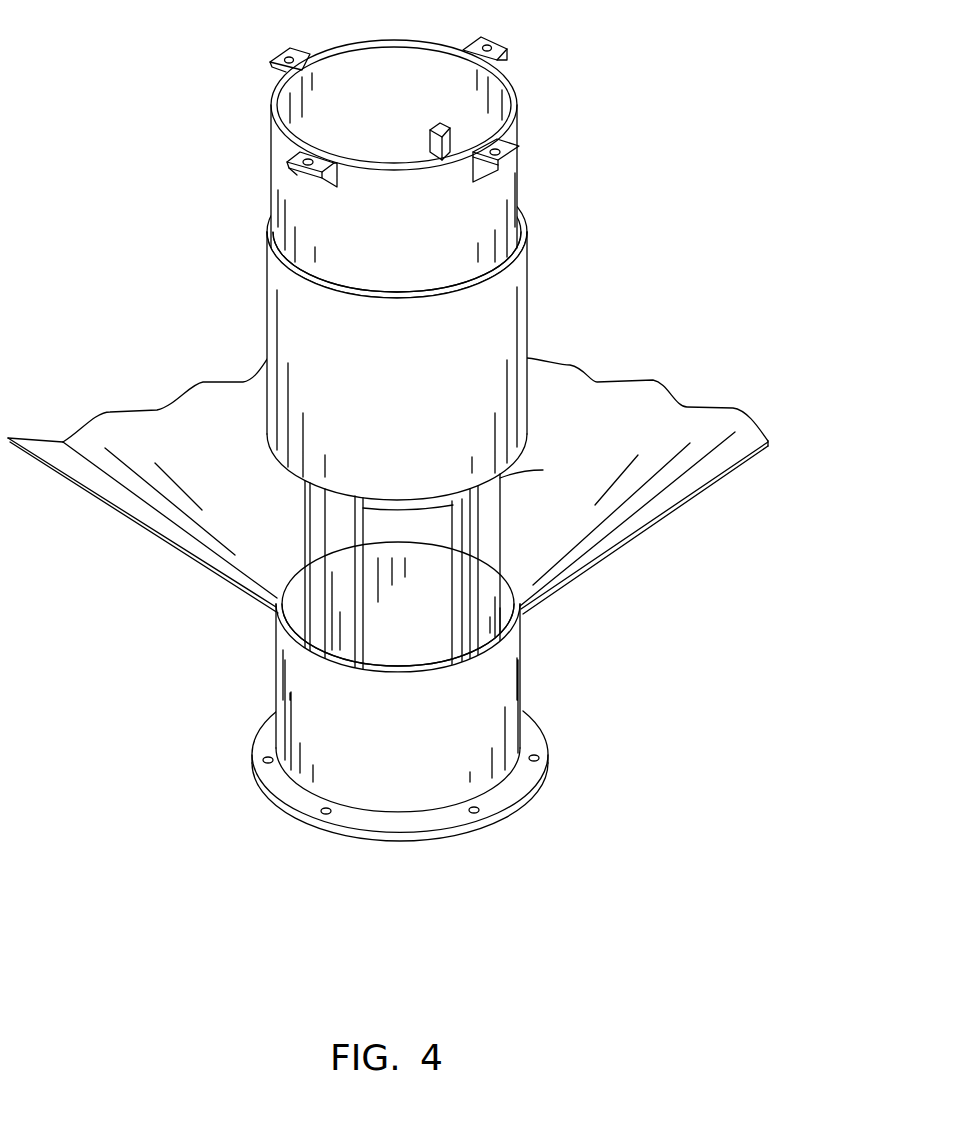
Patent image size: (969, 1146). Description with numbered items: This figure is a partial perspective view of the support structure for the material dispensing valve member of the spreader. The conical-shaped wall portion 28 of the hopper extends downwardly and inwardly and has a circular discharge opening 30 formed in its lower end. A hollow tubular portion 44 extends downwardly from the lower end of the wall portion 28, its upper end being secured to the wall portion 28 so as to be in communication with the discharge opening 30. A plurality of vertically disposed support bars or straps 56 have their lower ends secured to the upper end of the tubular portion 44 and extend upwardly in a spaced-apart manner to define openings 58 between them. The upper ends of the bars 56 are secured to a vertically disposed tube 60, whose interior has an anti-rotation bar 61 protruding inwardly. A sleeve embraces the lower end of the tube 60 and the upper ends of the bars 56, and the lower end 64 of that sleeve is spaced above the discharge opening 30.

The conical-shaped wall portion 28 is at (660, 476).
The circular discharge opening 30 is at (520, 607).
The hollow tubular portion 44 is at (338, 692).
The vertically disposed support bars or straps 56 is at (340, 535).
The openings 58 is at (443, 587).
The vertically disposed tube 60 is at (505, 222).
The anti-rotation bar 61 is at (447, 128).
The lower end of sleeve 64 is at (507, 463).